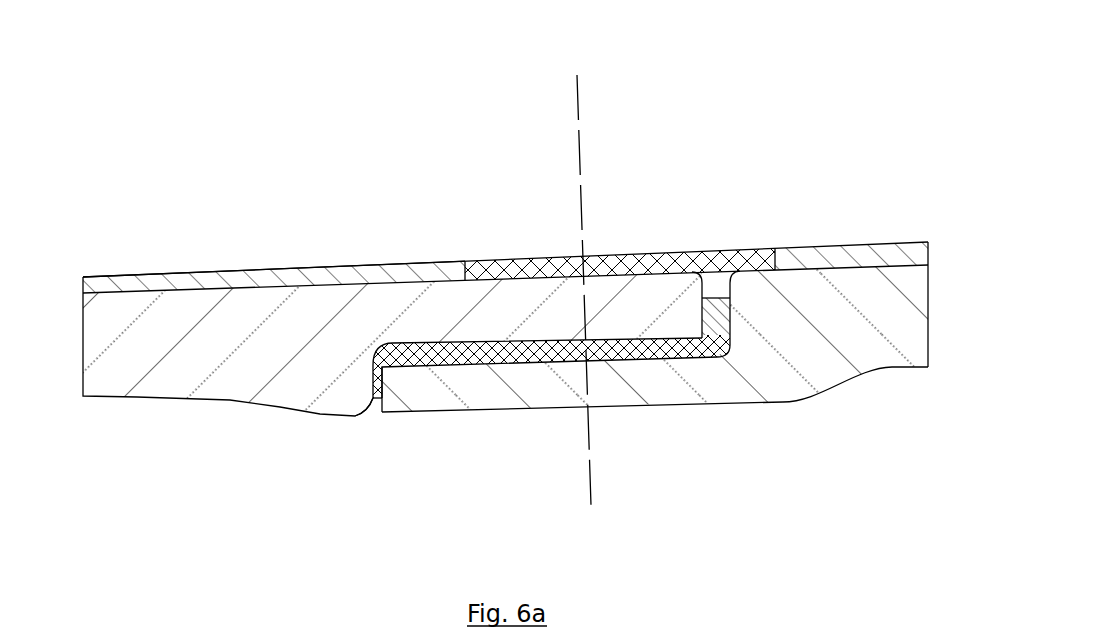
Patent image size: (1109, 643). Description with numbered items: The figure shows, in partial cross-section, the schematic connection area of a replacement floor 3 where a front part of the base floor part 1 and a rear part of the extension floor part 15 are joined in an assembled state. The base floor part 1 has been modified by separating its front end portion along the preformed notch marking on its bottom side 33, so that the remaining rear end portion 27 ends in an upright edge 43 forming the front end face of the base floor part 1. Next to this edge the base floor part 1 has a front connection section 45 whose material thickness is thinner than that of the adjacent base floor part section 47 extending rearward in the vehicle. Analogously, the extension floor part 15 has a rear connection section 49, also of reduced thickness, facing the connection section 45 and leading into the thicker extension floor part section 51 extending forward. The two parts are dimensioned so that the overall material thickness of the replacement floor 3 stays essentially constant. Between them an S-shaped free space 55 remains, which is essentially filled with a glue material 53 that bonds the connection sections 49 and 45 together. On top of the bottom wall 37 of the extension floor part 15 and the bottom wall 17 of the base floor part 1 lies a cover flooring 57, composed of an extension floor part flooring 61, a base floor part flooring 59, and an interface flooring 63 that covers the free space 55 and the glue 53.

The replacement floor 3 is at (351, 130).
The extension floor part 15 is at (157, 318).
The extension floor part section 51 is at (193, 383).
The rear connection section 49 is at (527, 305).
The free space 55 is at (366, 427).
The bottom wall 37 is at (240, 287).
The bottom wall 17 is at (835, 265).
The cover flooring 57 is at (384, 246).
The extension floor part flooring 61 is at (330, 280).
The interface flooring 63 is at (640, 266).
The base floor part flooring 59 is at (800, 256).
The glue material 53 is at (647, 352).
The base floor part 1 is at (870, 290).
The base floor part section 47 is at (910, 318).
The front connection section 45 is at (552, 388).
The rear end portion 27 is at (888, 386).
The bottom side 33 is at (742, 404).
The upright edge 43 is at (382, 412).